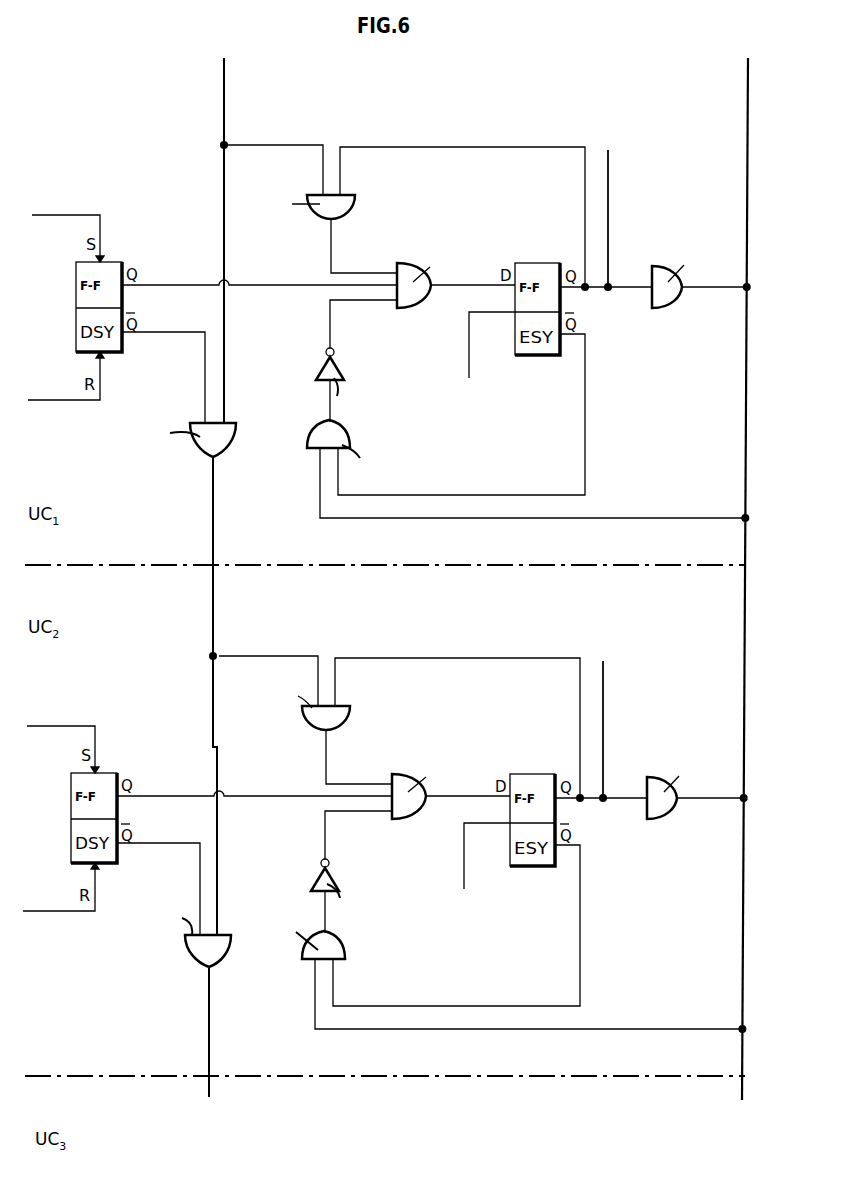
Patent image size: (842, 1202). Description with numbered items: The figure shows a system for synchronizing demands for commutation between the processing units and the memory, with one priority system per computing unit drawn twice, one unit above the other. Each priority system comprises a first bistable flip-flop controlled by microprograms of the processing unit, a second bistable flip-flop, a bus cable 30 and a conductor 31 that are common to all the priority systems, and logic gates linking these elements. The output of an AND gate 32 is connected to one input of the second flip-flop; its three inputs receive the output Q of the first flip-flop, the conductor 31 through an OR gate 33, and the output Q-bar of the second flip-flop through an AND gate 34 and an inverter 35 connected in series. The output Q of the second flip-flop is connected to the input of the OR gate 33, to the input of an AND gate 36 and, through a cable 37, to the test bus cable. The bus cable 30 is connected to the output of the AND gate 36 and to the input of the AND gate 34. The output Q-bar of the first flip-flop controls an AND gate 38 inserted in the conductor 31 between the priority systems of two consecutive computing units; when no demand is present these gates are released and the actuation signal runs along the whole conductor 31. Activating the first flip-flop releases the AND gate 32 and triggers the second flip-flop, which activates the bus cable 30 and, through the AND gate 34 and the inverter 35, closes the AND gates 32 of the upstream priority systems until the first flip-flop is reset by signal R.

The bus cable 30 is at (744, 603).
The conductor 31 is at (211, 533).
The AND gate 32 is at (413, 272).
The OR gate 33 is at (357, 205).
The AND gate 34 is at (352, 438).
The inverter 35 is at (346, 369).
The AND gate 36 is at (660, 266).
The cable 37 is at (612, 163).
The AND gate 38 is at (200, 447).